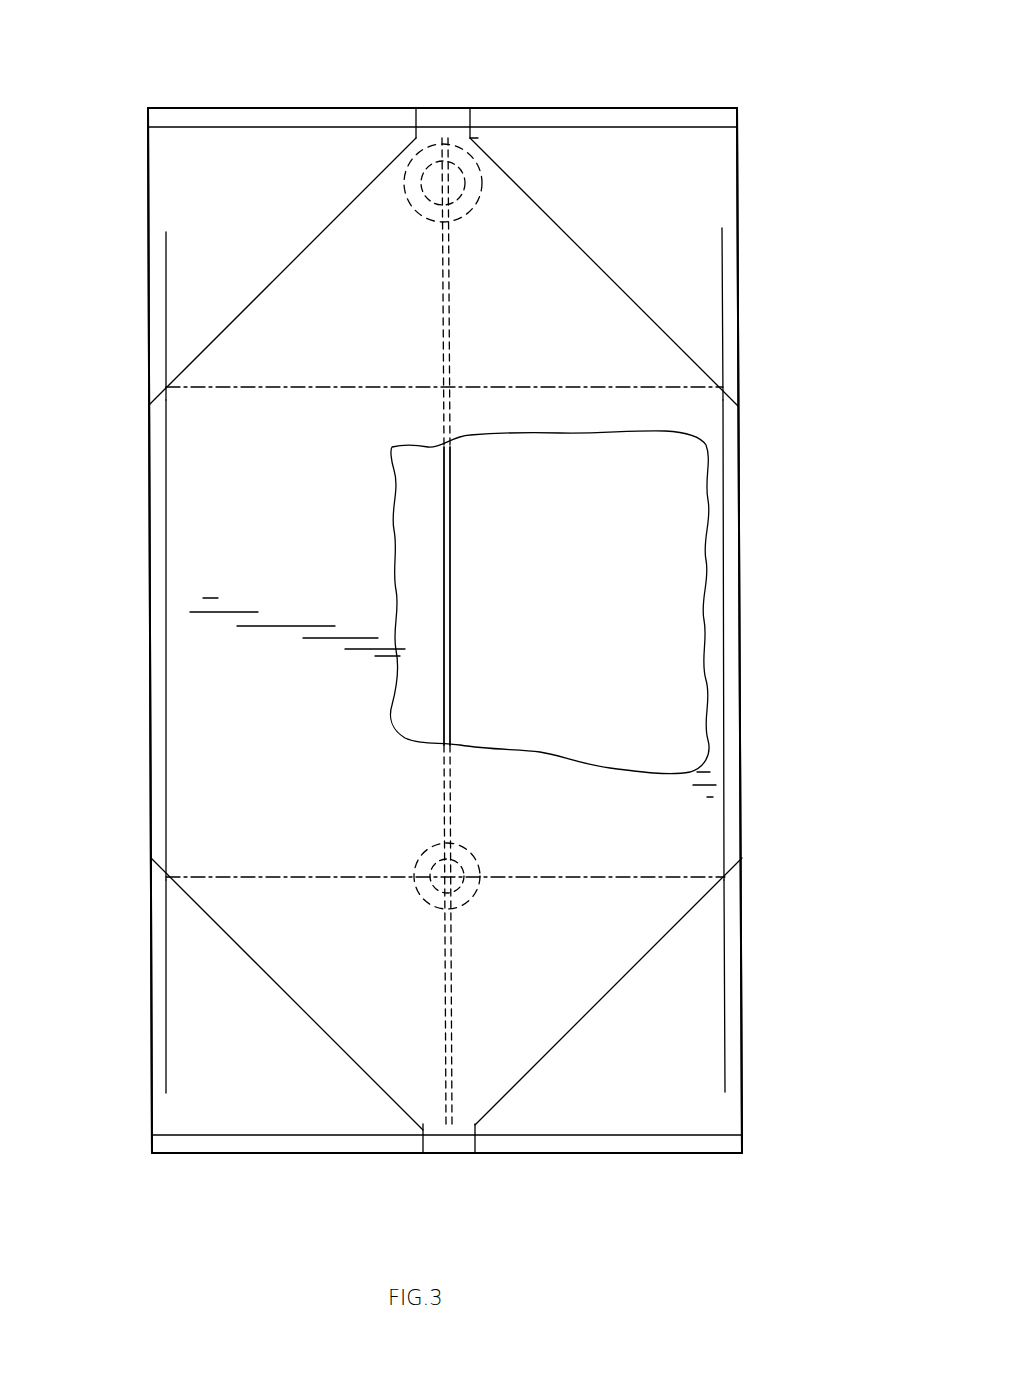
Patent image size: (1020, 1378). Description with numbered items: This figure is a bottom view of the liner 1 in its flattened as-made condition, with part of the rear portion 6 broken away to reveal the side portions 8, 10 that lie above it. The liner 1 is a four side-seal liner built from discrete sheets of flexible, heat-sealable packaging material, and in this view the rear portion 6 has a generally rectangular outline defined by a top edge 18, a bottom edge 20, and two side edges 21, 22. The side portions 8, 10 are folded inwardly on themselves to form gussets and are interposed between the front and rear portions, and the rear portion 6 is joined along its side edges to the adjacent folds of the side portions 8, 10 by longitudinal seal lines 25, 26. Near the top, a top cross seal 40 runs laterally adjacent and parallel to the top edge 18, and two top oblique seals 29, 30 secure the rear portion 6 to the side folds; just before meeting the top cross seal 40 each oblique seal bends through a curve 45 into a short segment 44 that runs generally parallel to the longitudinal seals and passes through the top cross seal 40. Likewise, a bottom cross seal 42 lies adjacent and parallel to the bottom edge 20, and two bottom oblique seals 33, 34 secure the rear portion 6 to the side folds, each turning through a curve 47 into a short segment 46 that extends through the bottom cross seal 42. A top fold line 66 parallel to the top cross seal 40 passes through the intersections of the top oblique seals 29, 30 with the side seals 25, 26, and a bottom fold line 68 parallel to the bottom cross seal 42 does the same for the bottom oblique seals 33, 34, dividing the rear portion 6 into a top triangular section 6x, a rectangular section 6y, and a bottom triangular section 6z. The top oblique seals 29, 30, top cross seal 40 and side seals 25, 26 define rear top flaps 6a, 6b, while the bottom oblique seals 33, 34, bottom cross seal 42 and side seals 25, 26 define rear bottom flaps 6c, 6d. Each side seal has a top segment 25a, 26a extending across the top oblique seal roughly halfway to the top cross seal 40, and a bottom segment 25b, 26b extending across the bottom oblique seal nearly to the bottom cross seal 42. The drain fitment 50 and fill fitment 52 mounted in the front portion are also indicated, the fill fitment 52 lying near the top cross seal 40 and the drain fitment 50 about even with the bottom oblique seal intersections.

The liner 1 is at (432, 46).
The rear portion 6 is at (758, 91).
The rear top flap 6a is at (260, 189).
The rear top flap 6b is at (646, 182).
The rear bottom flap 6c is at (666, 1047).
The rear bottom flap 6d is at (259, 1052).
The top triangular section 6x is at (345, 319).
The rectangular section 6y is at (303, 539).
The bottom triangular section 6z is at (378, 977).
The side portion 8 is at (563, 537).
The side portion 10 is at (428, 509).
The top edge 18 is at (440, 108).
The bottom edge 20 is at (463, 1153).
The side edge 21 is at (739, 417).
The side edge 22 is at (150, 431).
The longitudinal seal line 25 is at (167, 527).
The top segment 25a is at (160, 307).
The bottom segment 25b is at (168, 985).
The longitudinal seal line 26 is at (723, 576).
The top segment 26a is at (723, 291).
The bottom segment 26b is at (725, 1013).
The top oblique seal 29 is at (265, 290).
The top oblique seal 30 is at (613, 280).
The bottom oblique seal 33 is at (227, 935).
The bottom oblique seal 34 is at (683, 918).
The top cross seal 40 is at (592, 127).
The bottom cross seal 42 is at (592, 1135).
The short segment 44 is at (478, 118).
The curve 45 is at (472, 140).
The short segment 46 is at (408, 1150).
The curve 47 is at (423, 1130).
The drain fitment 50 is at (480, 848).
The fill fitment 52 is at (428, 218).
The top fold line 66 is at (530, 387).
The bottom fold line 68 is at (588, 877).